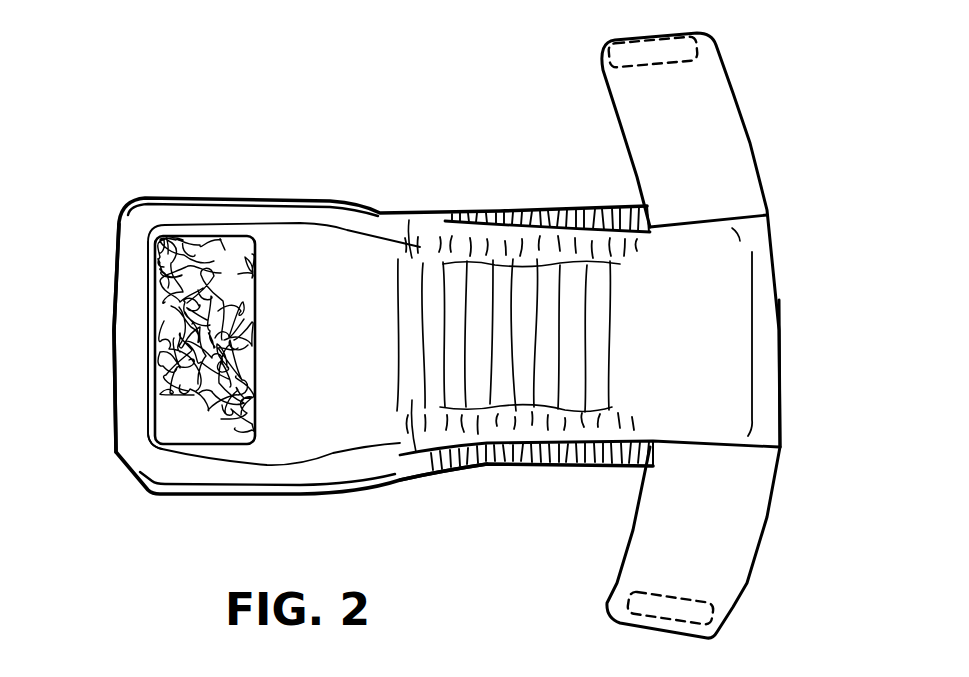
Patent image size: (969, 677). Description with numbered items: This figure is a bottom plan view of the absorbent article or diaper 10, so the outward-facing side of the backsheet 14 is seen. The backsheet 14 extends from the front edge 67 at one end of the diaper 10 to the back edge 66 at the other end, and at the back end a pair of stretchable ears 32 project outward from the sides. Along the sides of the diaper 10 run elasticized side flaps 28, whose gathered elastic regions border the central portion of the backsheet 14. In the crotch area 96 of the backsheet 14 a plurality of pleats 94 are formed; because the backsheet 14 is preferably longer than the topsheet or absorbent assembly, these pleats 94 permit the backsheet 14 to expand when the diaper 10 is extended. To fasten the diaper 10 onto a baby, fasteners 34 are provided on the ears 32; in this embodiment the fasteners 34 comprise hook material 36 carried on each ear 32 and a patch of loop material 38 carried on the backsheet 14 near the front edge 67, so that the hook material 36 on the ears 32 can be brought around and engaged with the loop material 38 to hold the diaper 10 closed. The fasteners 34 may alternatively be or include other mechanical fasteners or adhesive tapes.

The diaper 10 is at (245, 95).
The backsheet 14 is at (717, 280).
The elasticized side flaps 28 is at (547, 215).
The stretchable ears 32 is at (727, 122).
The fasteners 34 is at (155, 442).
The hook material 36 is at (700, 33).
The loop material 38 is at (198, 246).
The back edge 66 is at (781, 357).
The front edge 67 is at (113, 302).
The pleats 94 is at (462, 288).
The crotch area 96 is at (493, 496).